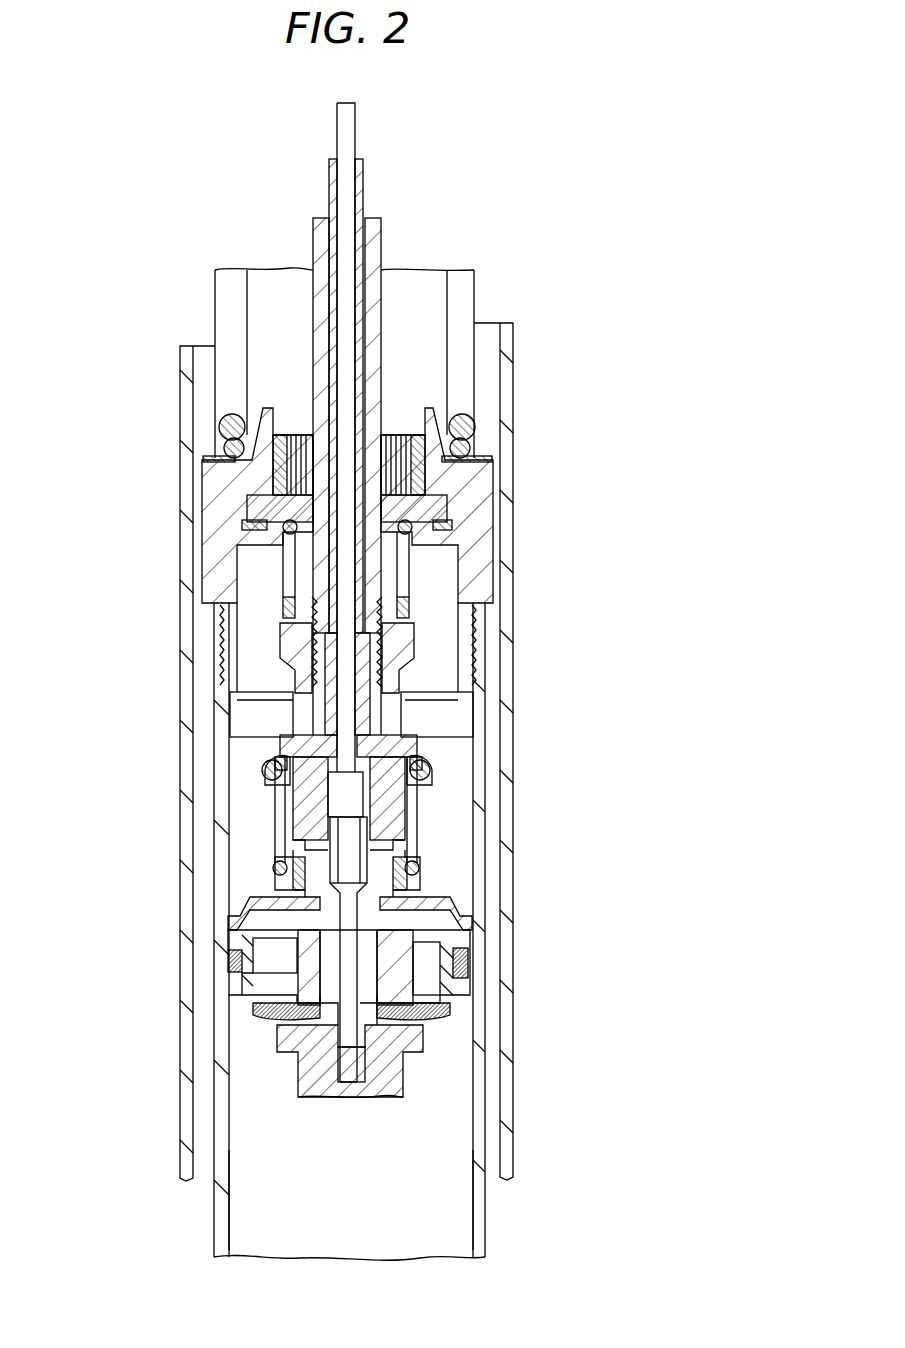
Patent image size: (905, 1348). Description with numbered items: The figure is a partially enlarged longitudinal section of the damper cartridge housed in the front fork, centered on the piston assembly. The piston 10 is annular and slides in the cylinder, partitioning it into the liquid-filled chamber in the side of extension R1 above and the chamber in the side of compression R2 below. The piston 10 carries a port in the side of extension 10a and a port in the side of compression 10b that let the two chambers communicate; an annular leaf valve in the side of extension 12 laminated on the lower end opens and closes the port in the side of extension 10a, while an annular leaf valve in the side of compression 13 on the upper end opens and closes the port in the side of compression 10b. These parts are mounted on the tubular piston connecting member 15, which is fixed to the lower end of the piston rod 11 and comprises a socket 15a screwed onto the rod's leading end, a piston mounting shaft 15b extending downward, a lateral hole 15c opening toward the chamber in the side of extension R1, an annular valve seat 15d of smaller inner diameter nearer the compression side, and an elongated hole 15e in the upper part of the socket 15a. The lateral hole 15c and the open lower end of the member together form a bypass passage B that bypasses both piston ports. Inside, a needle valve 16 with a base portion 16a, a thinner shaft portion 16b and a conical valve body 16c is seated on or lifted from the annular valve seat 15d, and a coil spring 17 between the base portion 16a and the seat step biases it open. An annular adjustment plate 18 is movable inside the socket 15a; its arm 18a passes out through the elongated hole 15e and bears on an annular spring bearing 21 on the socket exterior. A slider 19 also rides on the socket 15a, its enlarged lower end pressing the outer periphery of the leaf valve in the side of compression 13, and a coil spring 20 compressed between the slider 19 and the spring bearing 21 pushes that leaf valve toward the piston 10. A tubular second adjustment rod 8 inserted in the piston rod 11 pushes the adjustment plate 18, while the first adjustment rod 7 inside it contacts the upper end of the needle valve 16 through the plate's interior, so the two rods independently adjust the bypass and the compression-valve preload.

The first adjustment rod 7 is at (355, 130).
The second adjustment rod 8 is at (363, 195).
The piston rod 11 is at (382, 235).
The piston connecting member 15 is at (426, 640).
The socket 15a is at (420, 795).
The piston mounting shaft 15b is at (275, 1010).
The lateral hole 15c is at (425, 870).
The annular valve seat 15d is at (275, 866).
The elongated hole 15e is at (395, 722).
The needle valve 16 is at (318, 790).
The base portion 16a is at (345, 800).
The shaft portion 16b is at (422, 876).
The valve body 16c is at (295, 880).
The coil spring 17 is at (365, 830).
The adjustment plate 18 is at (430, 741).
The arm 18a is at (272, 749).
The slider 19 is at (300, 903).
The coil spring 20 is at (290, 878).
The spring bearing 21 is at (434, 767).
The piston 10 is at (486, 987).
The port in the side of extension 10a is at (430, 955).
The port in the side of compression 10b is at (237, 972).
The leaf valve in the side of extension 12 is at (400, 1032).
The leaf valve in the side of compression 13 is at (445, 905).
The bypass passage B is at (340, 1050).
The chamber in the side of extension R1 is at (249, 706).
The chamber in the side of compression R2 is at (417, 1208).